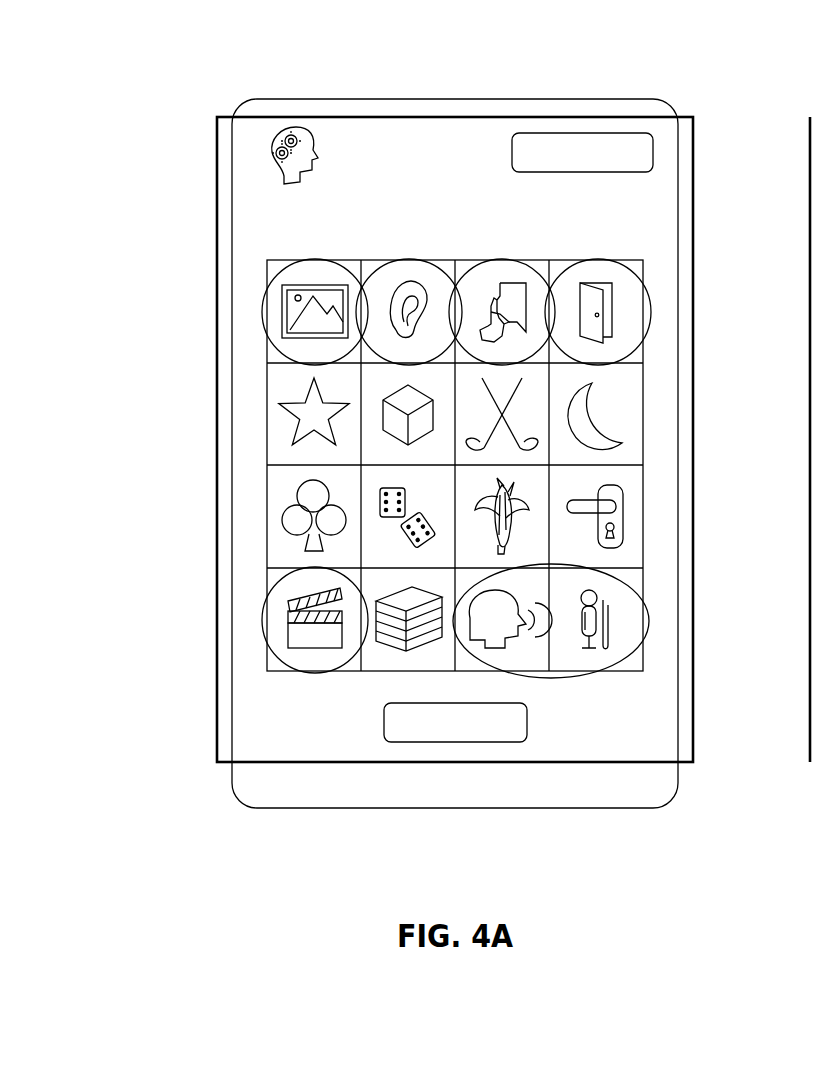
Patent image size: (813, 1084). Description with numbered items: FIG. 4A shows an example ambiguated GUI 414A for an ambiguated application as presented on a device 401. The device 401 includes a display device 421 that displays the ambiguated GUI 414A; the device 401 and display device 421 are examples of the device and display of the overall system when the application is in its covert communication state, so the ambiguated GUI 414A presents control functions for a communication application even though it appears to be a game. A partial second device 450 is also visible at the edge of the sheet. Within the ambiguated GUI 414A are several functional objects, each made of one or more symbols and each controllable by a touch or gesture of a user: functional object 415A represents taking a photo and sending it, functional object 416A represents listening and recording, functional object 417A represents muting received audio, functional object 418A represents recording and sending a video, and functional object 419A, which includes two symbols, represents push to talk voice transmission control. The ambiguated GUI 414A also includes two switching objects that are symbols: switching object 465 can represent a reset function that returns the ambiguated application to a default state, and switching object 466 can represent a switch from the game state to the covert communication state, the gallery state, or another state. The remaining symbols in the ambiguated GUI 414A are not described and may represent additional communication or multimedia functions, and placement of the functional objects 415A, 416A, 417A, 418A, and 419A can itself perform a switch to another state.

The device 401 is at (440, 468).
The display device 421 is at (650, 99).
The second mobile device 450 is at (812, 40).
The switching object 466 is at (658, 147).
The switching object 465 is at (523, 742).
The ambiguated GUI 414A is at (217, 560).
The functional object 415A is at (259, 323).
The functional object 416A is at (372, 360).
The functional object 417A is at (638, 272).
The functional object 418A is at (272, 664).
The functional object 419A is at (626, 660).